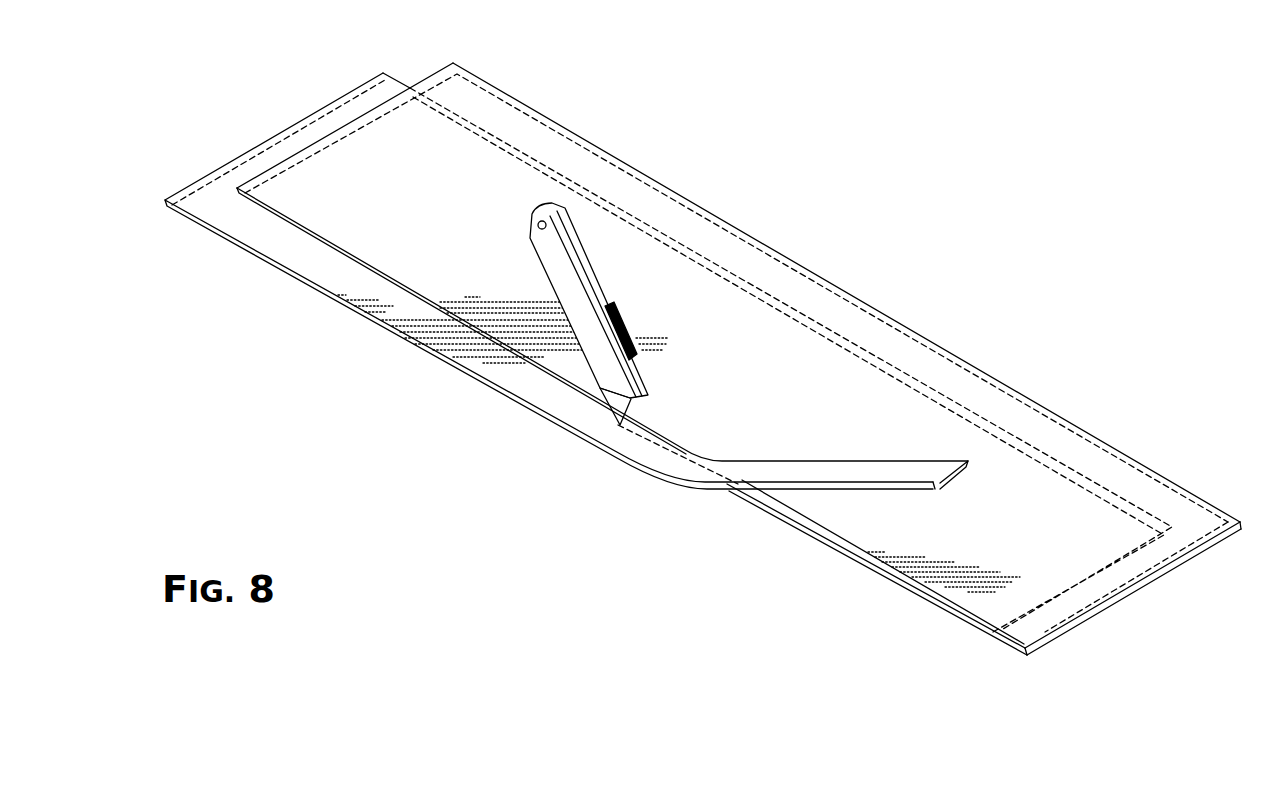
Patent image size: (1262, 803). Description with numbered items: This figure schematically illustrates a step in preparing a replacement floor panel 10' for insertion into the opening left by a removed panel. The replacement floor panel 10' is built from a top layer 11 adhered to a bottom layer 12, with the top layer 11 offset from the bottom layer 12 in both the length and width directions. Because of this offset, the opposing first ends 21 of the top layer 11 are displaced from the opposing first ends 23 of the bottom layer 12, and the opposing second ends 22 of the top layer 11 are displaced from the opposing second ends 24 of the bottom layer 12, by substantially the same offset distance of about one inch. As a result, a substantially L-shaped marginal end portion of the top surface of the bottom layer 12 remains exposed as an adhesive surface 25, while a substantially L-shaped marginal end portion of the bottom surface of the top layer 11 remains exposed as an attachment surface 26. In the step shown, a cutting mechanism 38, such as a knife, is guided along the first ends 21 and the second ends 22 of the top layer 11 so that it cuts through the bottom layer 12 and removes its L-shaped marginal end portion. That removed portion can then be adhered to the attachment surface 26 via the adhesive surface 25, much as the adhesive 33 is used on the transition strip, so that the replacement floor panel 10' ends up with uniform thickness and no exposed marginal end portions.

The replacement floor panel 10' is at (713, 359).
The top layer 11 is at (732, 359).
The bottom layer 12 is at (668, 345).
The first ends 21 is at (428, 78).
The second ends 22 is at (1140, 462).
The first ends 23 is at (1100, 608).
The second ends 24 is at (1003, 431).
The adhesive surface 25 is at (600, 445).
The attachment surface 26 is at (727, 240).
The adhesive 33 is at (263, 143).
The cutting mechanism 38 is at (548, 258).